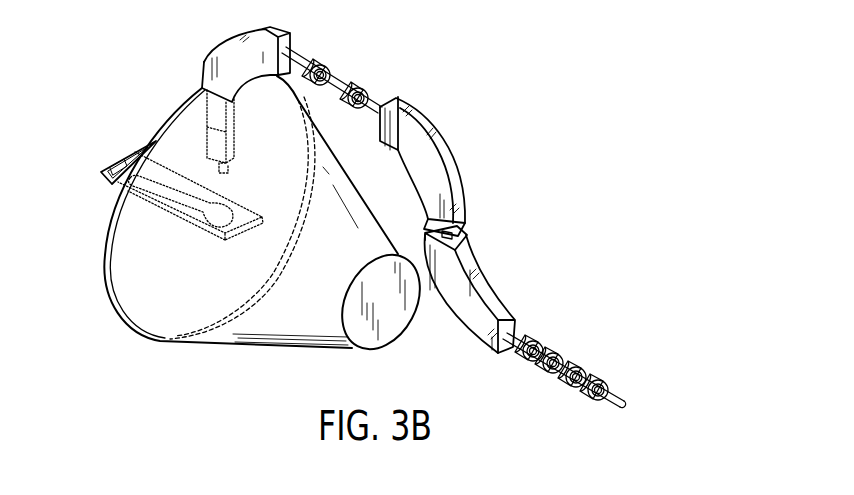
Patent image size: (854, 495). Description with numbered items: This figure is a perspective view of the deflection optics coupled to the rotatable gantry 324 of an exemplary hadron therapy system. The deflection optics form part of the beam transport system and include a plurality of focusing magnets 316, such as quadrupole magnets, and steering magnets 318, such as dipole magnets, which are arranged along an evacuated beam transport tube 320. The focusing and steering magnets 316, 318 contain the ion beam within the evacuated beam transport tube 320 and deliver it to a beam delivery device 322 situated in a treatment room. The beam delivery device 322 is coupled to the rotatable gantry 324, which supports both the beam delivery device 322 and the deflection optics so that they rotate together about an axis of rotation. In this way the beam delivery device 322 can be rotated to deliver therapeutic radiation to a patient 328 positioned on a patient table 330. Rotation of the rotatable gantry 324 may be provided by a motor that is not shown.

The focusing magnets 316 is at (312, 63).
The steering magnets 318 is at (205, 62).
The evacuated beam transport tube 320 is at (617, 397).
The beam delivery device 322 is at (234, 148).
The rotatable gantry 324 is at (225, 348).
The patient 328 is at (173, 177).
The patient table 330 is at (221, 240).